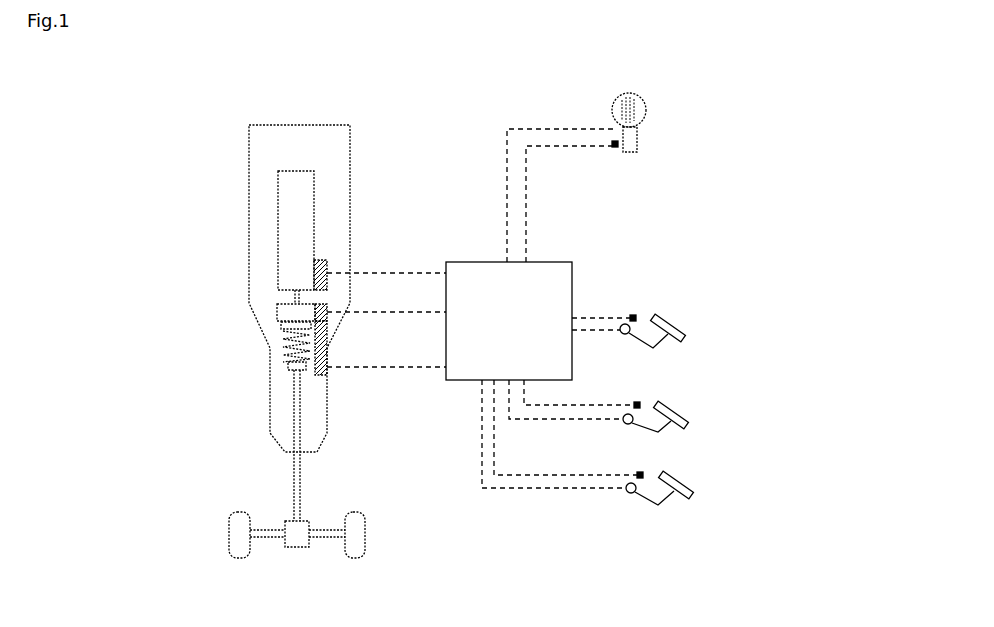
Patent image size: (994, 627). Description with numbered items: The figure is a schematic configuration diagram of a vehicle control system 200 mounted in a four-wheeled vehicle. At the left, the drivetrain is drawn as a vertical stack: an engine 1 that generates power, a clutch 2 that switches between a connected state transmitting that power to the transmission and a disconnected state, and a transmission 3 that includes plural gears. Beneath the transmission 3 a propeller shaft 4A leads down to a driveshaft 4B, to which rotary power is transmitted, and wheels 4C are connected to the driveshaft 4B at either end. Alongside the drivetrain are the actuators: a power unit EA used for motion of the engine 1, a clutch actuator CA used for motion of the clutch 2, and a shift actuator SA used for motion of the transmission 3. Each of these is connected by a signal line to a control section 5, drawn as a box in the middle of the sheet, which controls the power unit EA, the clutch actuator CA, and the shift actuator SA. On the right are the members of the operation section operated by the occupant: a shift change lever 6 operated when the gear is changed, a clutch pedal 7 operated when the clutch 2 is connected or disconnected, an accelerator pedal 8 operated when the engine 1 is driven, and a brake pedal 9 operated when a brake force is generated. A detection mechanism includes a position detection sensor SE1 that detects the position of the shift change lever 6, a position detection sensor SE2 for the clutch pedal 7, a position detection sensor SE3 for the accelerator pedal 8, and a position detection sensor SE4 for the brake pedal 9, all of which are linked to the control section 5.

The engine 1 is at (278, 229).
The clutch 2 is at (278, 323).
The transmission 3 is at (270, 375).
The propeller shaft 4A is at (300, 462).
The driveshaft 4B is at (325, 538).
The wheels 4C is at (246, 558).
The control section 5 is at (572, 268).
The shift change lever 6 is at (646, 108).
The clutch pedal 7 is at (668, 318).
The accelerator pedal 8 is at (672, 406).
The brake pedal 9 is at (680, 484).
The vehicle control system 200 is at (771, 136).
The power unit EA is at (321, 262).
The clutch actuator CA is at (327, 316).
The shift actuator SA is at (327, 370).
The position detection sensor SE1 is at (616, 150).
The position detection sensor SE2 is at (633, 314).
The position detection sensor SE3 is at (638, 402).
The position detection sensor SE4 is at (641, 472).